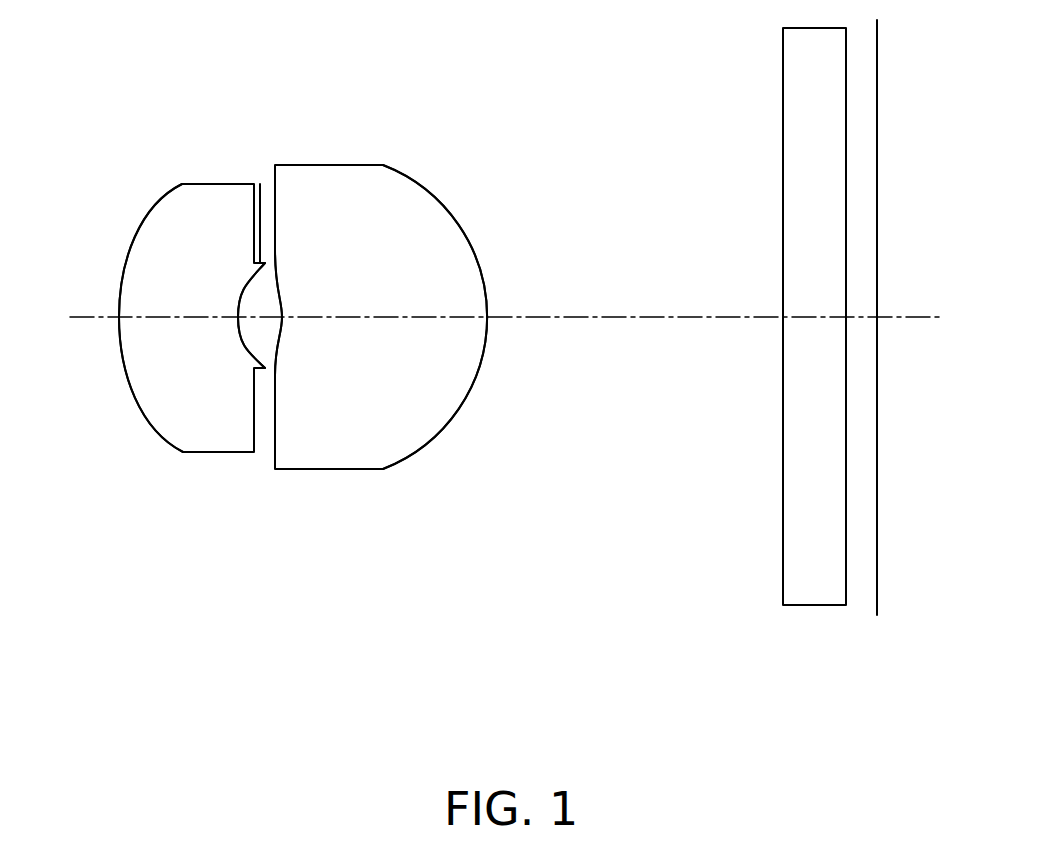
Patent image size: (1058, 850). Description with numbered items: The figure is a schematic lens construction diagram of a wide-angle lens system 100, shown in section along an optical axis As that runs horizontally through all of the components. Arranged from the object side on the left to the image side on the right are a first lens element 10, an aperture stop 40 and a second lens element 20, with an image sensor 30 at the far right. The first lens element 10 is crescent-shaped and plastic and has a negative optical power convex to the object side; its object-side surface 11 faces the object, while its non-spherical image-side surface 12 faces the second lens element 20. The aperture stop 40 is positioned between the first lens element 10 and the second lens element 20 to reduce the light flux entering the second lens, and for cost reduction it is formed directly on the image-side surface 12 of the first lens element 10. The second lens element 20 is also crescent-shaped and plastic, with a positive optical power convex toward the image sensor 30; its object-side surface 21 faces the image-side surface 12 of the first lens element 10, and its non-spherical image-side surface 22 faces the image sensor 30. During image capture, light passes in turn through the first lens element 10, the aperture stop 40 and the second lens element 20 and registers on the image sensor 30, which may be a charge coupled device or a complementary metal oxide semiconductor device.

The wide-angle lens system 100 is at (408, 100).
The first lens element 10 is at (165, 418).
The object-side surface 11 is at (125, 258).
The image-side surface 12 is at (270, 252).
The aperture stop 40 is at (255, 185).
The second lens element 20 is at (342, 450).
The object-side surface 21 is at (278, 342).
The image-side surface 22 is at (453, 220).
The image sensor 30 is at (820, 570).
The optical axis As is at (912, 317).